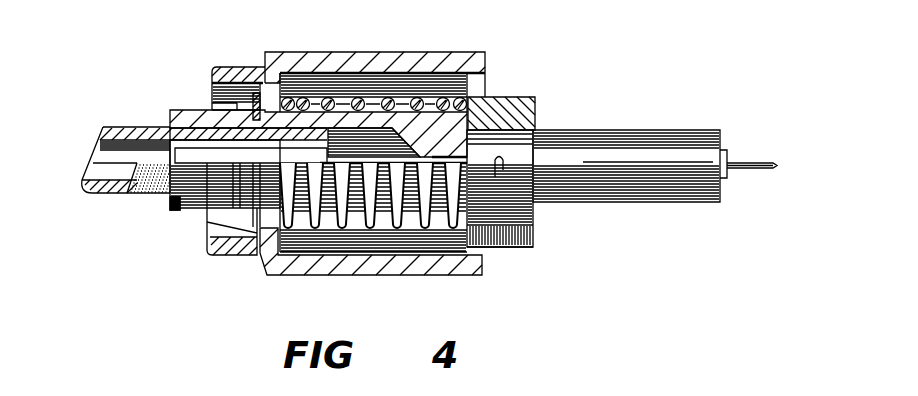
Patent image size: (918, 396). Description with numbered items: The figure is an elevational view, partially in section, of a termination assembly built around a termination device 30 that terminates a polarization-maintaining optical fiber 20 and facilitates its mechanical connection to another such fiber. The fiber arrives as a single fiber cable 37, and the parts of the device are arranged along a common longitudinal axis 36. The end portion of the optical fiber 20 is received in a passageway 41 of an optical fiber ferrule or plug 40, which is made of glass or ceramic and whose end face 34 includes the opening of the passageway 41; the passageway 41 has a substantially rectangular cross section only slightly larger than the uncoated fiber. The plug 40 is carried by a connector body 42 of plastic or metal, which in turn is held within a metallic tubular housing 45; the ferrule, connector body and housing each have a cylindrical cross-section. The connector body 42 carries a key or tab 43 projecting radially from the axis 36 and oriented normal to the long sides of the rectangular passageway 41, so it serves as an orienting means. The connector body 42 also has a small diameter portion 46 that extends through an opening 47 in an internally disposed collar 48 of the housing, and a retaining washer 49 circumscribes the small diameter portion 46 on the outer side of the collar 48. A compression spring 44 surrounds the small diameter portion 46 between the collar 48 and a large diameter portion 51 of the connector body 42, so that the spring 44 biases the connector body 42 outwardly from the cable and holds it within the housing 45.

The optical fiber 20 is at (757, 168).
The termination device 30 is at (556, 59).
The end face 34 is at (728, 157).
The longitudinal axis 36 is at (78, 164).
The single fiber cable 37 is at (145, 127).
The optical fiber ferrule or plug 40 is at (632, 130).
The passageway 41 is at (557, 163).
The connector body 42 is at (317, 120).
The key or tab 43 is at (533, 237).
The compression spring 44 is at (360, 97).
The tubular housing 45 is at (407, 52).
The small diameter portion 46 is at (242, 100).
The opening 47 is at (244, 118).
The collar 48 is at (260, 252).
The retaining washer 49 is at (210, 222).
The large diameter portion 51 is at (505, 102).